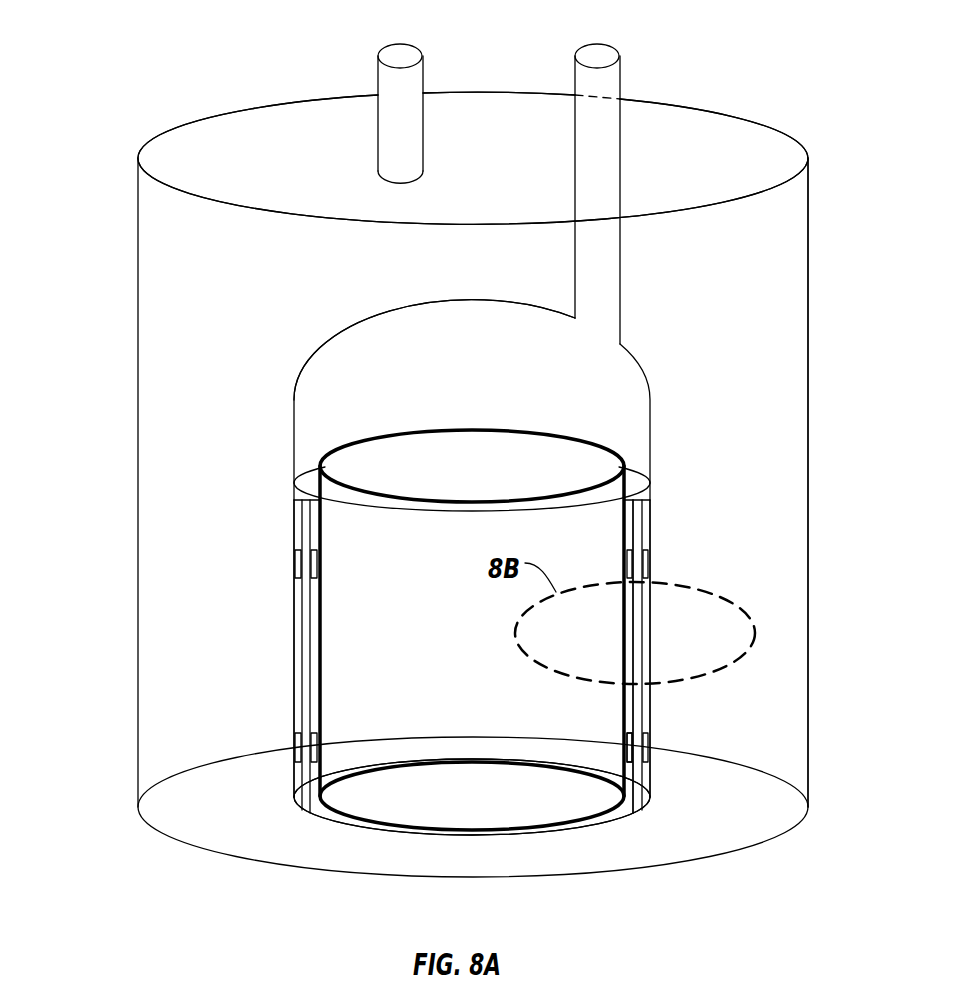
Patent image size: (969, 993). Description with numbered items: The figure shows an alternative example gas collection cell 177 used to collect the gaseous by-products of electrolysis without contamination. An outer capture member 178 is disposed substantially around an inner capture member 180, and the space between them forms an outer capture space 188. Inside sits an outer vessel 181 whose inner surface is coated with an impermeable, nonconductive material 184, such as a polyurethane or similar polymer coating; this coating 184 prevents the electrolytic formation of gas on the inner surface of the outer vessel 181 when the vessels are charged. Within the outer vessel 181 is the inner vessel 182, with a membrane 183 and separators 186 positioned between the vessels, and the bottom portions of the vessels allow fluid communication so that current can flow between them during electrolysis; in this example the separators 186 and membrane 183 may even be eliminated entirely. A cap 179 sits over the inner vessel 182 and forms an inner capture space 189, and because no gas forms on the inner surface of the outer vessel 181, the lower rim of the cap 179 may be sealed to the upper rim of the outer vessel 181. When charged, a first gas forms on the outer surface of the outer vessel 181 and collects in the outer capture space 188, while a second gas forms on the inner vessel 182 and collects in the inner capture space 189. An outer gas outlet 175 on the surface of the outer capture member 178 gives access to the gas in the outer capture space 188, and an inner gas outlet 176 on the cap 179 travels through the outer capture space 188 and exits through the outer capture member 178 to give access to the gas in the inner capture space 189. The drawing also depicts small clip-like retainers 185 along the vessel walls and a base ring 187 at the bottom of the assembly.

The detector assembly 177 is at (125, 40).
The outer gas outlet 175 is at (378, 153).
The inner gas outlet 176 is at (574, 153).
The outer capture member 178 is at (733, 112).
The outer capture space 188 is at (800, 227).
The inner capture space 189 is at (434, 350).
The cap 179 is at (635, 358).
The inner capture member 180 is at (472, 630).
The outer vessel 181 is at (652, 621).
The inner vessel 182 is at (621, 668).
The membrane 183 is at (643, 673).
The impermeable, nonconductive material 184 is at (294, 630).
The clip 185 is at (637, 727).
The separator 186 is at (623, 740).
The base ring 187 is at (651, 803).